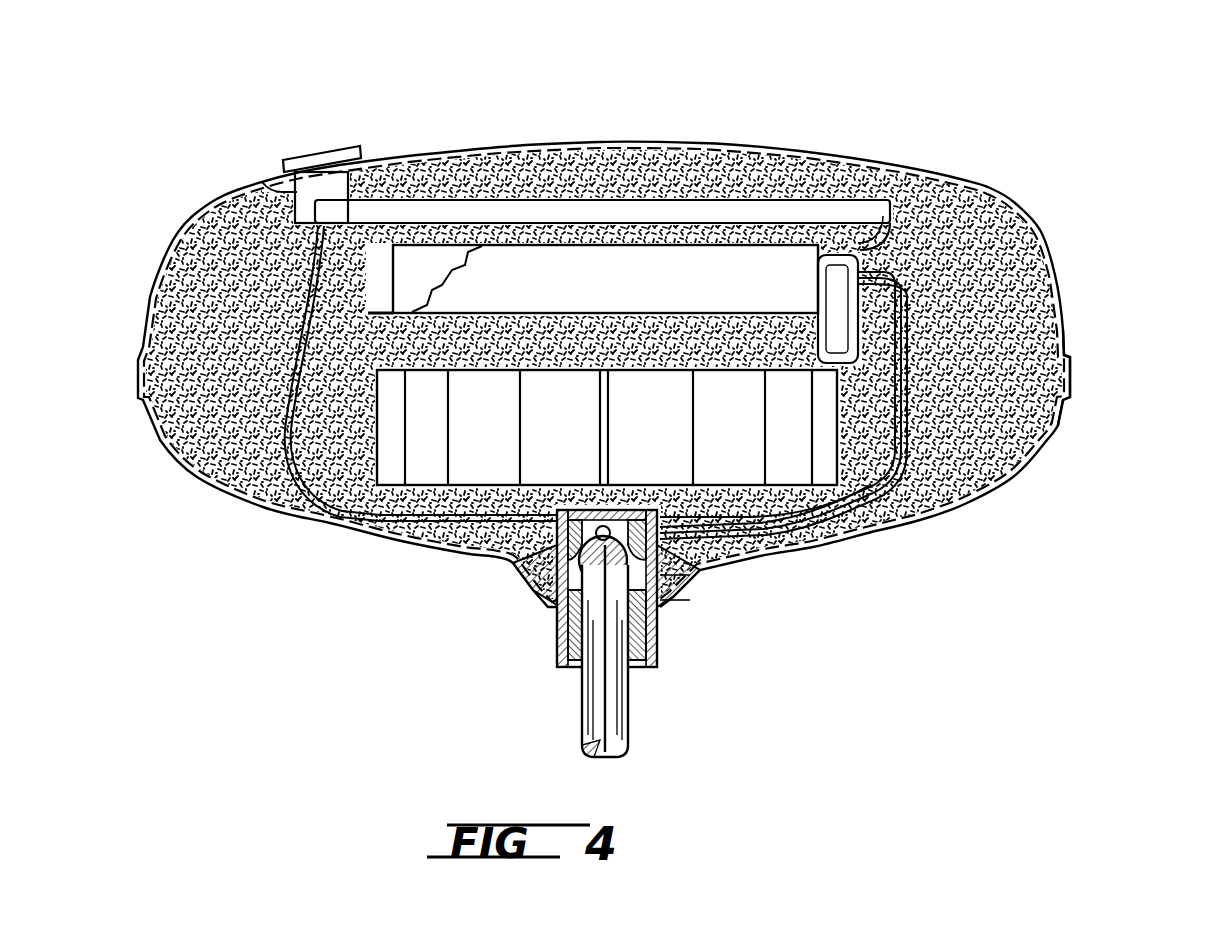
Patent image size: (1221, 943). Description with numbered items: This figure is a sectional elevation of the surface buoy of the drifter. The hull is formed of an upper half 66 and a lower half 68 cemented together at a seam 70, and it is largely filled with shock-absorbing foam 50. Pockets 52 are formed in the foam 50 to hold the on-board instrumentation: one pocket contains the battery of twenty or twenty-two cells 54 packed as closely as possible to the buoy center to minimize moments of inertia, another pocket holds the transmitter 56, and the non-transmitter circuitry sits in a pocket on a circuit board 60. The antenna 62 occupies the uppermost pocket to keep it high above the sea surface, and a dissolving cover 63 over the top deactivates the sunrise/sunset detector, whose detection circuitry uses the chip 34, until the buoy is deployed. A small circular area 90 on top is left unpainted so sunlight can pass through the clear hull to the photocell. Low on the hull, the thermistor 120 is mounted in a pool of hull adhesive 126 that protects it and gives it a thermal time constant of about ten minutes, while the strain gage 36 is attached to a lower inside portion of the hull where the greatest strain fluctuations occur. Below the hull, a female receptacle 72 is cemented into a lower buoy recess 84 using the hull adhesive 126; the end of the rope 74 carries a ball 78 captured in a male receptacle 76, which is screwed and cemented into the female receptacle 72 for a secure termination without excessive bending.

The chip 34 is at (328, 195).
The strain gage 36 is at (790, 555).
The shock-absorbing foam 50 is at (232, 458).
The pockets 52 is at (844, 418).
The cells 54 is at (803, 436).
The transmitter 56 is at (437, 273).
The circuit board 60 is at (628, 289).
The antenna 62 is at (822, 192).
The dissolving cover 63 is at (356, 148).
The upper hull half 66 is at (993, 185).
The lower hull half 68 is at (1018, 480).
The seam 70 is at (1082, 342).
The female receptacle 72 is at (495, 566).
The rope 74 is at (645, 693).
The male receptacle 76 is at (572, 612).
The ball 78 is at (558, 658).
The lower buoy recess 84 is at (545, 585).
The small circular area 90 is at (262, 185).
The thermistor 120 is at (690, 603).
The hull adhesive 126 is at (690, 580).